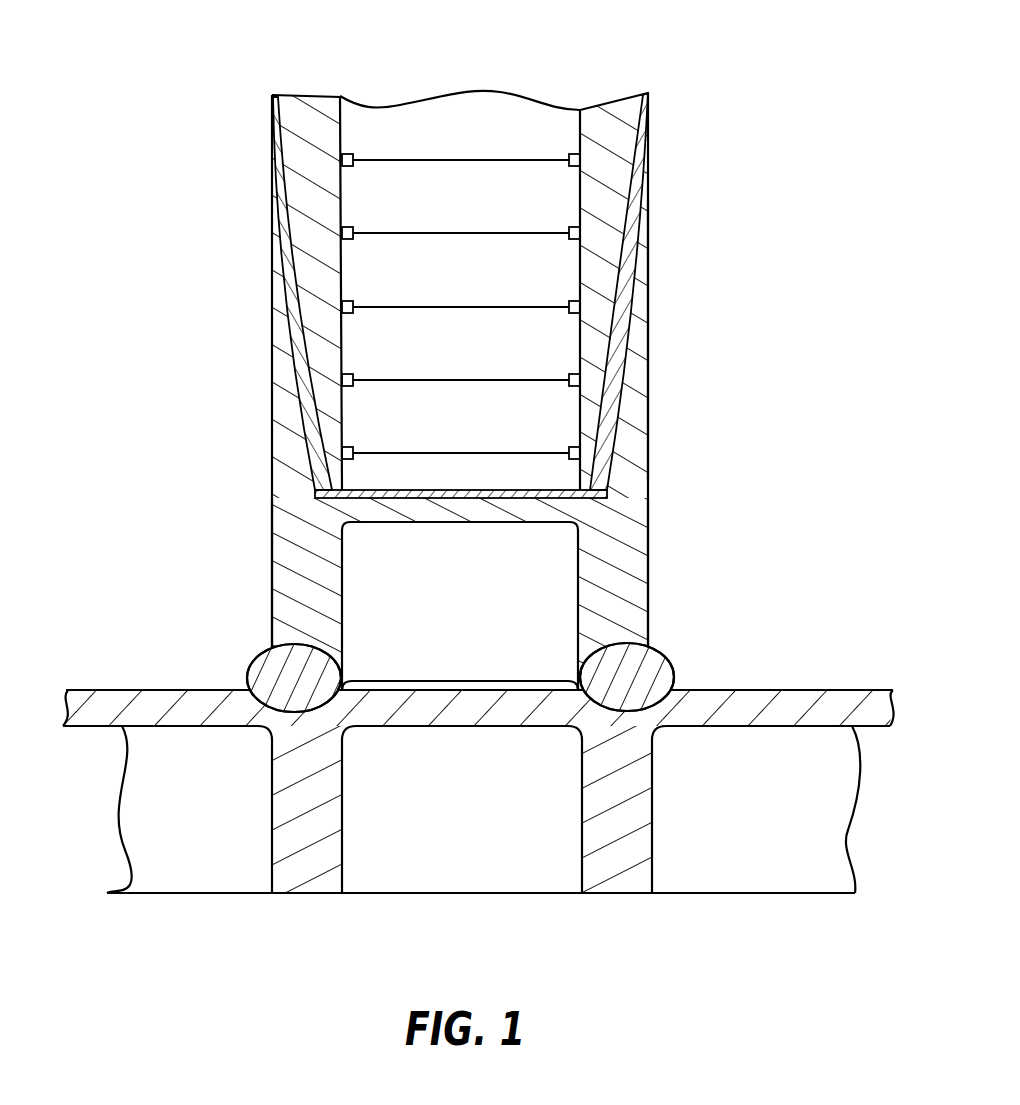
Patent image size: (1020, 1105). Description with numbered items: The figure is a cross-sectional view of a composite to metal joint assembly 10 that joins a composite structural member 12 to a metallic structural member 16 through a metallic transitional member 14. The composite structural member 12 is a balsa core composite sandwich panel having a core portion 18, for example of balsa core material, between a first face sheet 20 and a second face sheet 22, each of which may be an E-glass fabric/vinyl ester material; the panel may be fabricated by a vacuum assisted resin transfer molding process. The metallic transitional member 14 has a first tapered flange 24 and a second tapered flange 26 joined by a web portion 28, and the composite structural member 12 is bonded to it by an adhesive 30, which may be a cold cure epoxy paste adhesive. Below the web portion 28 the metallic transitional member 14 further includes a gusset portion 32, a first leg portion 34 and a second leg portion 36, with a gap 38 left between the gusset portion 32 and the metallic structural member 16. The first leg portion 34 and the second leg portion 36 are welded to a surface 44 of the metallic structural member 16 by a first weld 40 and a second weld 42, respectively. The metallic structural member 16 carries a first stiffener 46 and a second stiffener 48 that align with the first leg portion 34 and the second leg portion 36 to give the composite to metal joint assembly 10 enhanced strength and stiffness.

The composite to metal joint assembly 10 is at (160, 166).
The composite structural member 12 is at (467, 76).
The metallic transitional member 14 is at (250, 449).
The metallic structural member 16 is at (112, 764).
The core portion 18 is at (478, 209).
The first face sheet 20 is at (292, 105).
The second face sheet 22 is at (615, 120).
The first tapered flange 24 is at (283, 348).
The second tapered flange 26 is at (640, 325).
The web portion 28 is at (473, 508).
The adhesive 30 is at (625, 195).
The gusset portion 32 is at (553, 623).
The first leg portion 34 is at (290, 563).
The second leg portion 36 is at (625, 563).
The gap 38 is at (442, 683).
The first weld 40 is at (258, 670).
The second weld 42 is at (660, 675).
The surface 44 is at (827, 690).
The first stiffener 46 is at (287, 843).
The second stiffener 48 is at (637, 823).